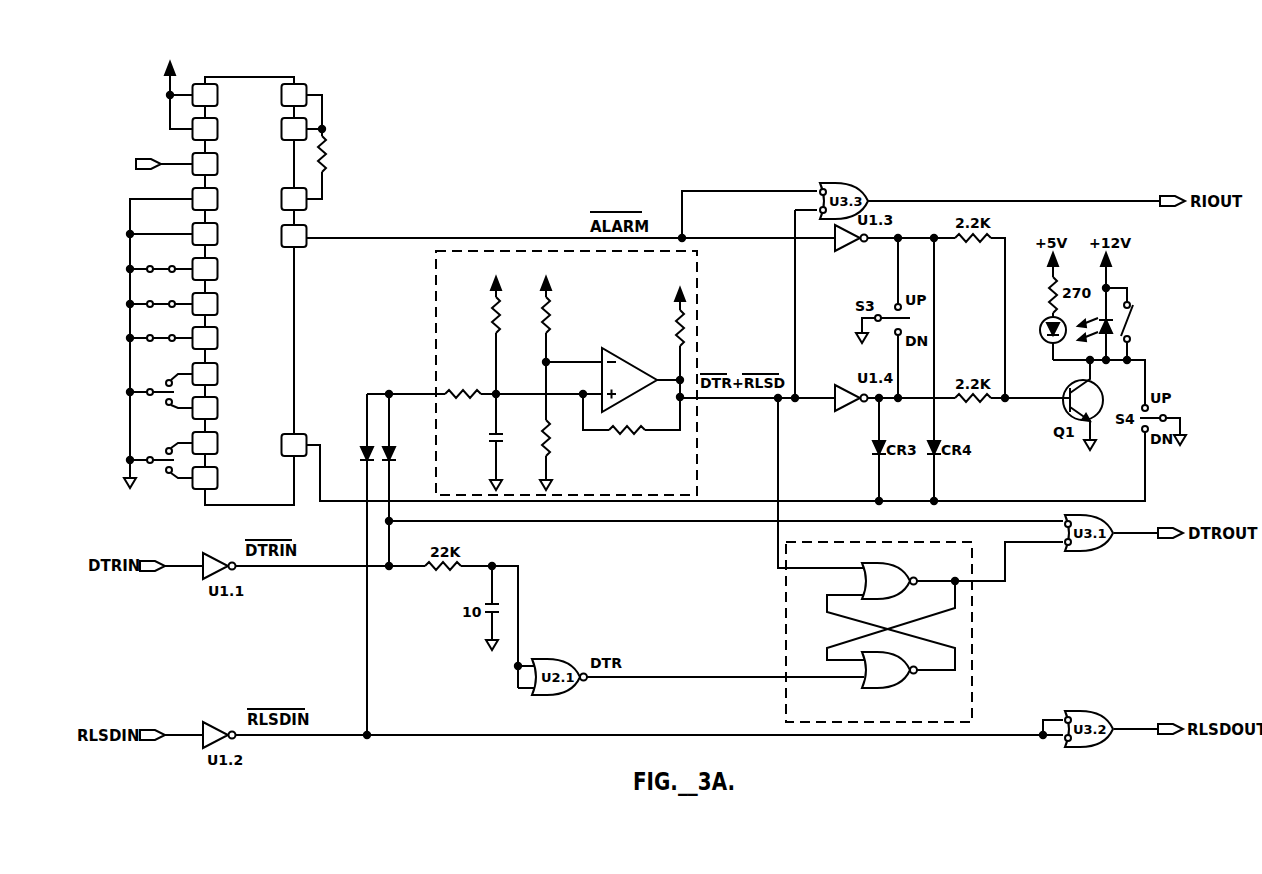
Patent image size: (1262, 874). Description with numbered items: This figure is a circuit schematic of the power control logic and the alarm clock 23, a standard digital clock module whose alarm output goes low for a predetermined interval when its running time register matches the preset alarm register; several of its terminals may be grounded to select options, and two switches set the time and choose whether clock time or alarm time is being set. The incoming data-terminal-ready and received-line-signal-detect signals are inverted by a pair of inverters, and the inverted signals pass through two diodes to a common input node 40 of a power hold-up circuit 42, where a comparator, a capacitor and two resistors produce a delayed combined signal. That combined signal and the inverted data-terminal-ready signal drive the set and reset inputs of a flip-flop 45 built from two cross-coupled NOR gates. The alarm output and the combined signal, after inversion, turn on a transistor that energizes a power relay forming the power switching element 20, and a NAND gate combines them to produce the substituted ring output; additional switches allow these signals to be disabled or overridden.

The alarm clock 23 is at (333, 69).
The common input node 40 is at (418, 391).
The power hold-up circuit 42 is at (698, 268).
The flip-flop 45 is at (973, 601).
The power switching element 20 is at (1140, 324).